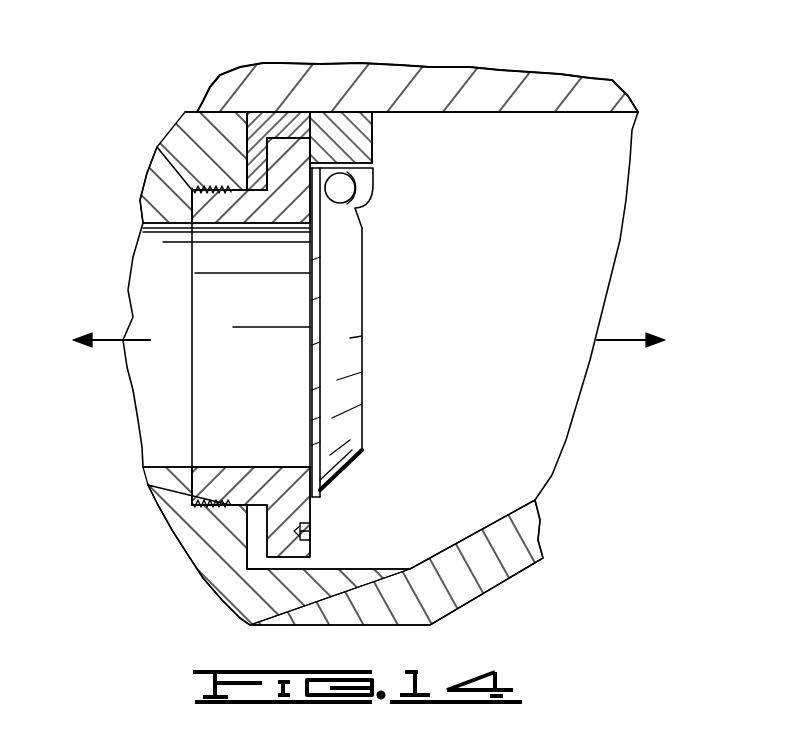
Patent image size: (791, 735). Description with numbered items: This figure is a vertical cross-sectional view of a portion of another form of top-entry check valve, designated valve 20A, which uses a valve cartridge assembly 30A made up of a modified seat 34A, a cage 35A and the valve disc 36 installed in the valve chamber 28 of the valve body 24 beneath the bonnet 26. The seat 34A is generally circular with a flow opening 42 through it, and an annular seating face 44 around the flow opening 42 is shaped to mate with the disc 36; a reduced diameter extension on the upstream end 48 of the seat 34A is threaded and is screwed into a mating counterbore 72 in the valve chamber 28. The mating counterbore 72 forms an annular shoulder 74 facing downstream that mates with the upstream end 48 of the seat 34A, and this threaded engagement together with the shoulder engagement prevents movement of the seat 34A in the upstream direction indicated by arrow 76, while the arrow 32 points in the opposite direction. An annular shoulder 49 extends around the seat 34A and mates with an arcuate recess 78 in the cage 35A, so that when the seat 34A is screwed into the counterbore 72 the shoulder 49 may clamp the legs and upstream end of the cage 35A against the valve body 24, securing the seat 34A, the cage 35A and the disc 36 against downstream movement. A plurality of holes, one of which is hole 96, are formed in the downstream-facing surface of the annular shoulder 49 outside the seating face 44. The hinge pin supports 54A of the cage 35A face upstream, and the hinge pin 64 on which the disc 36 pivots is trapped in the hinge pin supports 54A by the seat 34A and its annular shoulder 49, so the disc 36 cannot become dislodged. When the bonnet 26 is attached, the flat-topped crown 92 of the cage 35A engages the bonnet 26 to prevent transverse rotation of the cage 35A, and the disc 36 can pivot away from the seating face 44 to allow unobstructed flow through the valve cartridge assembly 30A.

The valve 20A is at (208, 68).
The valve body 24 is at (165, 160).
The bonnet 26 is at (468, 75).
The valve chamber 28 is at (490, 442).
The valve cartridge assembly 30A is at (382, 345).
The direction arrow 32 is at (628, 340).
The seat 34A is at (218, 458).
The cage 35A is at (380, 134).
The valve disc 36 is at (368, 299).
The flow opening 42 is at (242, 312).
The seating face 44 is at (330, 478).
The upstream end 48 is at (192, 267).
The annular shoulder 49 is at (278, 163).
The hinge pin supports 54A is at (363, 197).
The hinge pin 64 is at (345, 188).
The mating counterbore 72 is at (248, 512).
The annular shoulder 74 is at (190, 486).
The upstream direction arrow 76 is at (100, 340).
The arcuate recess 78 is at (290, 137).
The flat-topped crown 92 is at (328, 113).
The hole 96 is at (312, 531).